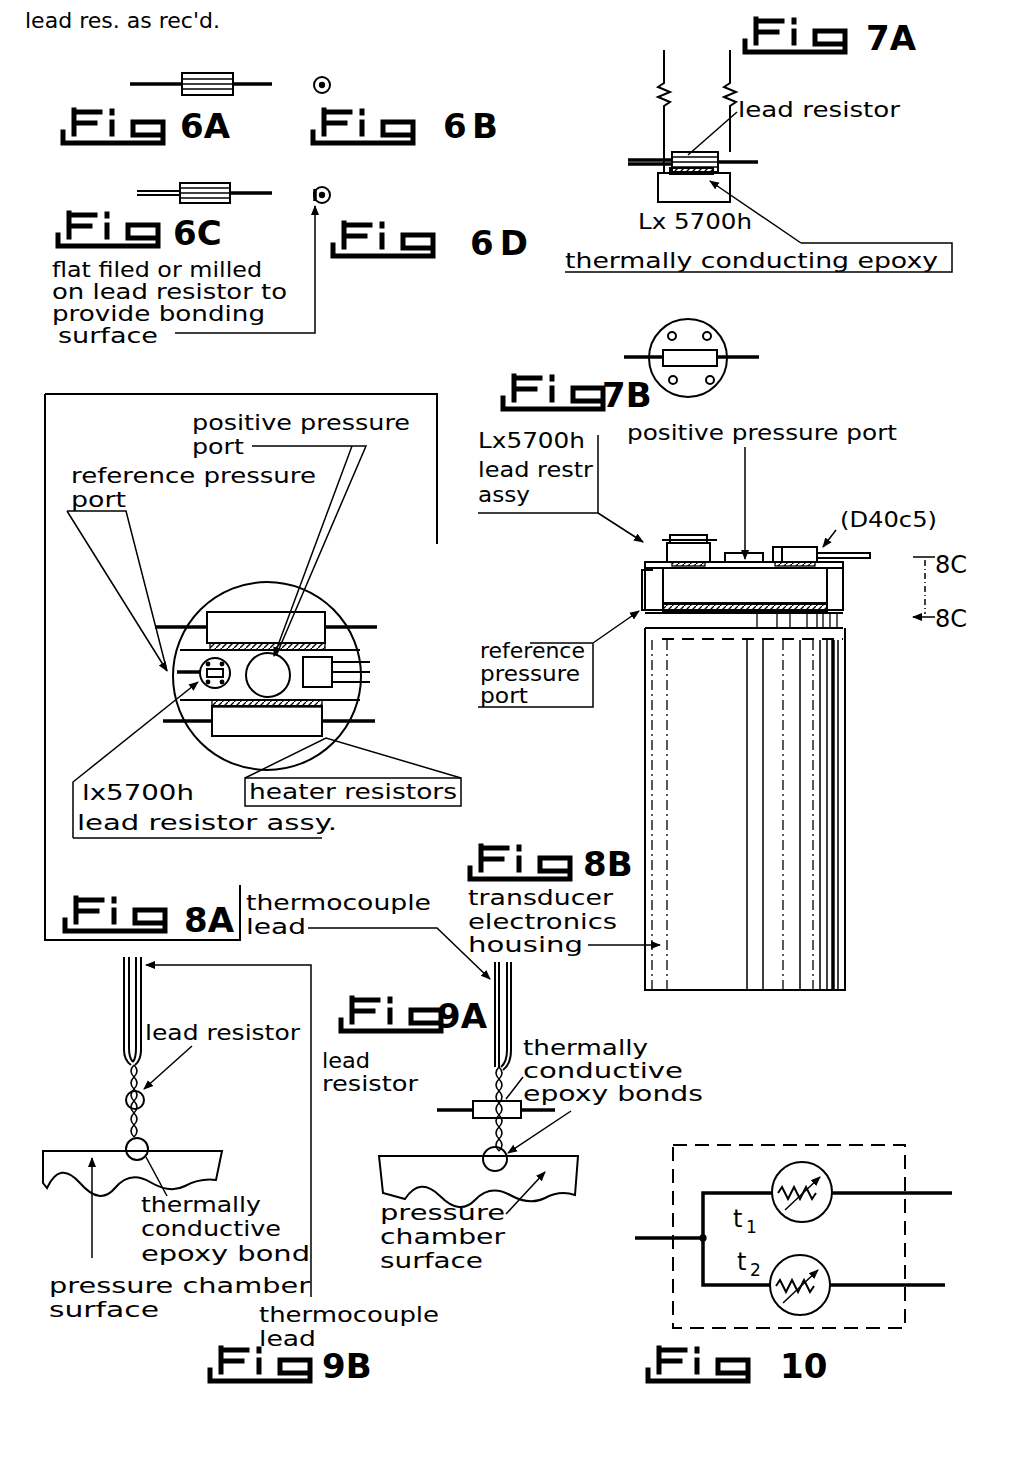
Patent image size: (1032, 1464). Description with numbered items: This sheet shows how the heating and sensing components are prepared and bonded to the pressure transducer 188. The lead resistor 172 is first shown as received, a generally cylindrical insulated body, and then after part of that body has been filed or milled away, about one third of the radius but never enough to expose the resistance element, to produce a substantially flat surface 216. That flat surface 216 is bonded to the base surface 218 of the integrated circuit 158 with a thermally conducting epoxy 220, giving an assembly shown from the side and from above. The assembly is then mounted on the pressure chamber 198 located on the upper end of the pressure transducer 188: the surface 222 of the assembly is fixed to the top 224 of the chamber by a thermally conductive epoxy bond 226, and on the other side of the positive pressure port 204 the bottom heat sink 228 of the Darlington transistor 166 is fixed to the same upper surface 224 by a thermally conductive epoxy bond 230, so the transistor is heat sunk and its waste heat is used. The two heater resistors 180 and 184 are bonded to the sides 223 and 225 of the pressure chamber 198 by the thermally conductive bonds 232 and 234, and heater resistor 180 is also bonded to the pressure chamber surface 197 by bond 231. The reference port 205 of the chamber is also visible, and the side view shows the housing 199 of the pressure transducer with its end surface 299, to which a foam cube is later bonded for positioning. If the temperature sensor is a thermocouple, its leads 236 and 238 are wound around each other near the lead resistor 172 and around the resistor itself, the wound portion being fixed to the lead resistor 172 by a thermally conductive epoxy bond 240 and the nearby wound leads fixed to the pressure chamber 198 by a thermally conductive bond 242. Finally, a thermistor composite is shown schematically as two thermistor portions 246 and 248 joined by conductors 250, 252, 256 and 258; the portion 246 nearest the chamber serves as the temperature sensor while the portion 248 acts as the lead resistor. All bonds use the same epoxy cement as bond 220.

In FIG. 7A, the IC-1 158 is at (733, 178).
In FIG. 7B, the IC-1 158 is at (717, 338).
In FIG. 8B, the IC-1 158 is at (653, 540).
In FIG. 8A, the Darlington transistor 166 is at (333, 610).
In FIG. 8B, the Darlington transistor 166 is at (803, 545).
In FIG. 6A, the lead resistor 172 is at (214, 61).
In FIG. 6B, the lead resistor 172 is at (328, 77).
In FIG. 6C, the lead resistor 172 is at (232, 185).
In FIG. 6D, the lead resistor 172 is at (324, 187).
In FIG. 7A, the lead resistor 172 is at (704, 148).
In FIG. 7B, the lead resistor 172 is at (717, 348).
In FIG. 8B, the lead resistor 172 is at (697, 532).
In FIG. 9A, the lead resistor 172 is at (494, 1087).
In FIG. 9B, the lead resistor 172 is at (126, 1068).
In FIG. 8A, the heater resistor 180 is at (265, 731).
In FIG. 8B, the heater resistor 180 is at (757, 568).
In FIG. 8A, the heater resistor 184 is at (232, 618).
In FIG. 8A, the pressure transducer 188 is at (160, 687).
In FIG. 8B, the pressure transducer 188 is at (848, 698).
In FIG. 8A, the pressure chamber surface 197 is at (222, 614).
In FIG. 8B, the pressure chamber surface 197 is at (642, 630).
In FIG. 8A, the pressure chamber 198 is at (164, 678).
In FIG. 8B, the pressure chamber 198 is at (845, 598).
In FIG. 9A, the pressure chamber 198 is at (586, 1152).
In FIG. 9B, the pressure chamber 198 is at (217, 1152).
In FIG. 8B, the pressure transducer housing 199 is at (840, 758).
In FIG. 8A, the positive pressure port 204 is at (278, 616).
In FIG. 8B, the positive pressure port 204 is at (749, 553).
In FIG. 8A, the reference port 205 is at (166, 671).
In FIG. 8B, the reference port 205 is at (638, 602).
In FIG. 6C, the flat surface 216 is at (223, 204).
In FIG. 6D, the flat surface 216 is at (329, 200).
In FIG. 7A, the flat surface 216 is at (662, 186).
In FIG. 8B, the flat surface 216 is at (660, 563).
In FIG. 7A, the base surface 218 is at (735, 172).
In FIG. 7B, the base surface 218 is at (689, 329).
In FIG. 7A, the thermally conducting epoxy 220 is at (647, 165).
In FIG. 8B, the thermally conducting epoxy 220 is at (666, 578).
In FIG. 7A, the assembly surface 222 is at (642, 207).
In FIG. 8B, the assembly surface 222 is at (667, 540).
In FIG. 8A, the pressure chamber side 223 is at (350, 712).
In FIG. 8B, the pressure chamber side 223 is at (835, 583).
In FIG. 8A, the pressure chamber top 224 is at (351, 688).
In FIG. 8B, the pressure chamber top 224 is at (643, 592).
In FIG. 8A, the pressure chamber side 225 is at (362, 646).
In FIG. 8B, the thermally conductive epoxy bond 226 is at (724, 558).
In FIG. 8B, the heat sink 228 is at (847, 557).
In FIG. 8B, the thermally conductive epoxy bond 230 is at (790, 547).
In FIG. 8B, the thermally conductive bond 231 is at (843, 612).
In FIG. 8A, the thermally conductive bond 232 is at (208, 716).
In FIG. 8A, the thermally conductive bond 234 is at (183, 668).
In FIG. 9A, the thermocouple lead 236 is at (507, 1030).
In FIG. 9B, the thermocouple lead 236 is at (123, 980).
In FIG. 9A, the thermocouple lead 238 is at (496, 1003).
In FIG. 9B, the thermocouple lead 238 is at (141, 1005).
In FIG. 9A, the thermally conductive epoxy bond 240 is at (496, 1108).
In FIG. 9B, the thermally conductive epoxy bond 240 is at (126, 1098).
In FIG. 9A, the thermally conductive bond 242 is at (484, 1153).
In FIG. 9B, the thermally conductive bond 242 is at (128, 1144).
In FIG. 10, the thermistor portion 246 is at (823, 1170).
In FIG. 10, the thermistor portion 248 is at (820, 1267).
In FIG. 10, the conductor 250 is at (932, 1180).
In FIG. 10, the conductor 252 is at (897, 1287).
In FIG. 10, the conductor 256 is at (753, 1192).
In FIG. 10, the conductor 258 is at (753, 1288).
In FIG. 8B, the end surface 299 is at (795, 992).